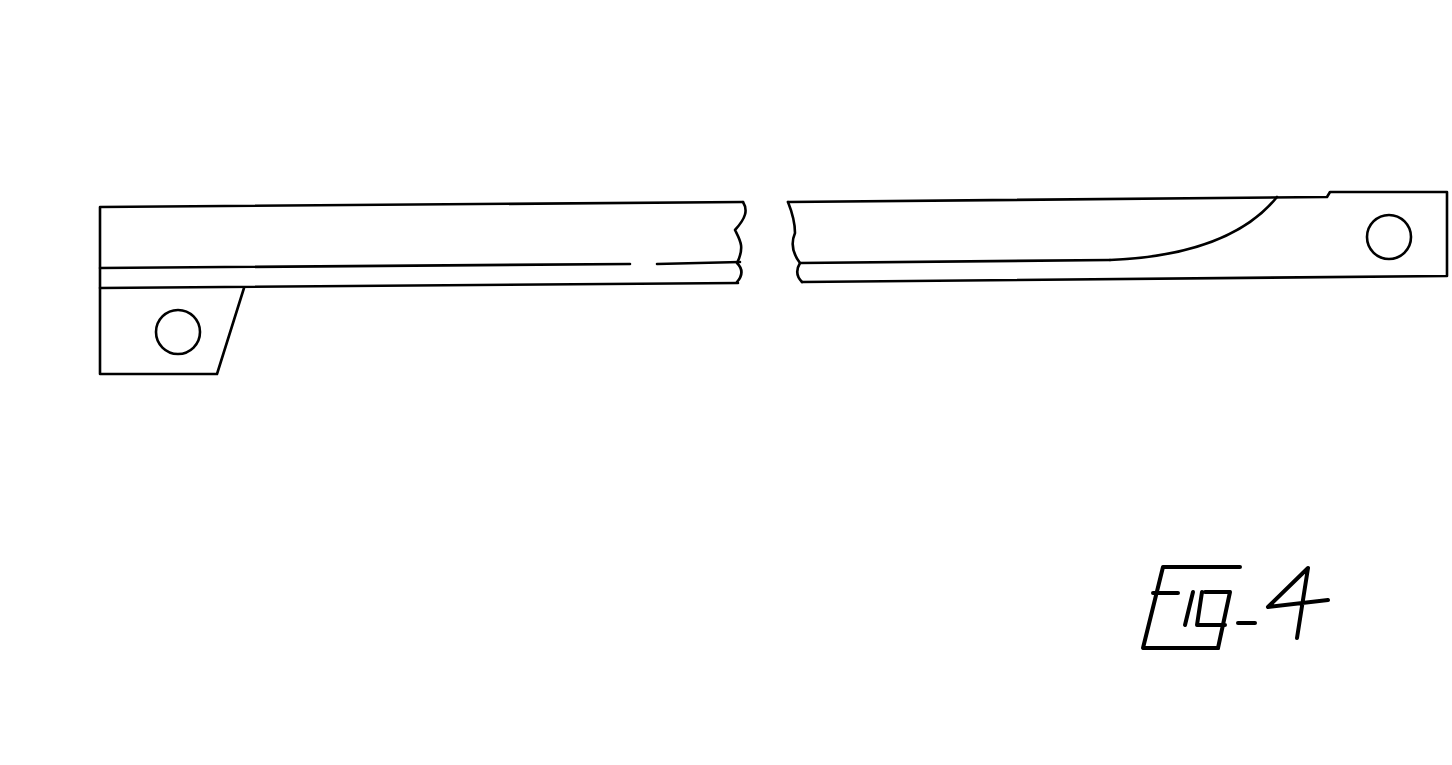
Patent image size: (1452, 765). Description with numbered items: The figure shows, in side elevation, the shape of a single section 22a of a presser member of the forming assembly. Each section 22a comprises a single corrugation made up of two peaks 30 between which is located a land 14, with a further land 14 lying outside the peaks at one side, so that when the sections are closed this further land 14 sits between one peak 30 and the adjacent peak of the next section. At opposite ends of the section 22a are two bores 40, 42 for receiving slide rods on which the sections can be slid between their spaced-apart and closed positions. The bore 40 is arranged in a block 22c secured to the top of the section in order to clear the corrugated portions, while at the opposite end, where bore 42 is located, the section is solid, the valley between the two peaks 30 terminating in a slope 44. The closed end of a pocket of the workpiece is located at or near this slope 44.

The land 14 is at (630, 264).
The section 22a is at (900, 342).
The block 22c is at (135, 356).
The peak 30 is at (588, 225).
The bore 40 is at (175, 348).
The bore 42 is at (1380, 247).
The slope 44 is at (1238, 232).